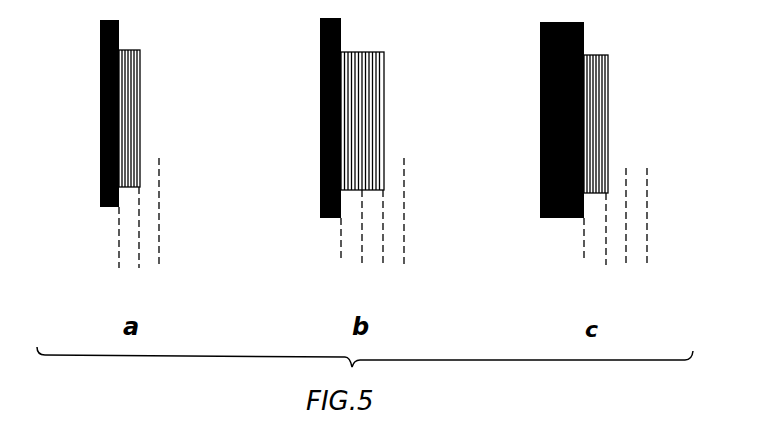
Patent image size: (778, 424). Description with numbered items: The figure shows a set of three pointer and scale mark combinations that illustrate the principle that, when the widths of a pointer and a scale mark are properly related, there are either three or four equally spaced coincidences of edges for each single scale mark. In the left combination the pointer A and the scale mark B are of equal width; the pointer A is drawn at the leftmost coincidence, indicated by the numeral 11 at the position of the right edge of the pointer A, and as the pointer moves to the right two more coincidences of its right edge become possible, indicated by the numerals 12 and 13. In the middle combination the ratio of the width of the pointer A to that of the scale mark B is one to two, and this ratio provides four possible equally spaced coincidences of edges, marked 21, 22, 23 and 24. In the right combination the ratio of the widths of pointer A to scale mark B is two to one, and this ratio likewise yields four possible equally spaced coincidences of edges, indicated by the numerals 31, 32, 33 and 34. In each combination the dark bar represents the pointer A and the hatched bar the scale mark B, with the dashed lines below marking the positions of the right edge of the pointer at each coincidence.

The pointer A is at (100, 38).
The scale mark B is at (140, 78).
The leftmost coincidence 11 is at (119, 268).
The coincidence 12 is at (139, 268).
The coincidence 13 is at (159, 268).
The coincidence 21 is at (341, 262).
The coincidence 22 is at (362, 265).
The coincidence 23 is at (383, 265).
The coincidence 24 is at (404, 265).
The coincidence 31 is at (584, 262).
The coincidence 32 is at (606, 265).
The coincidence 33 is at (626, 265).
The coincidence 34 is at (647, 265).